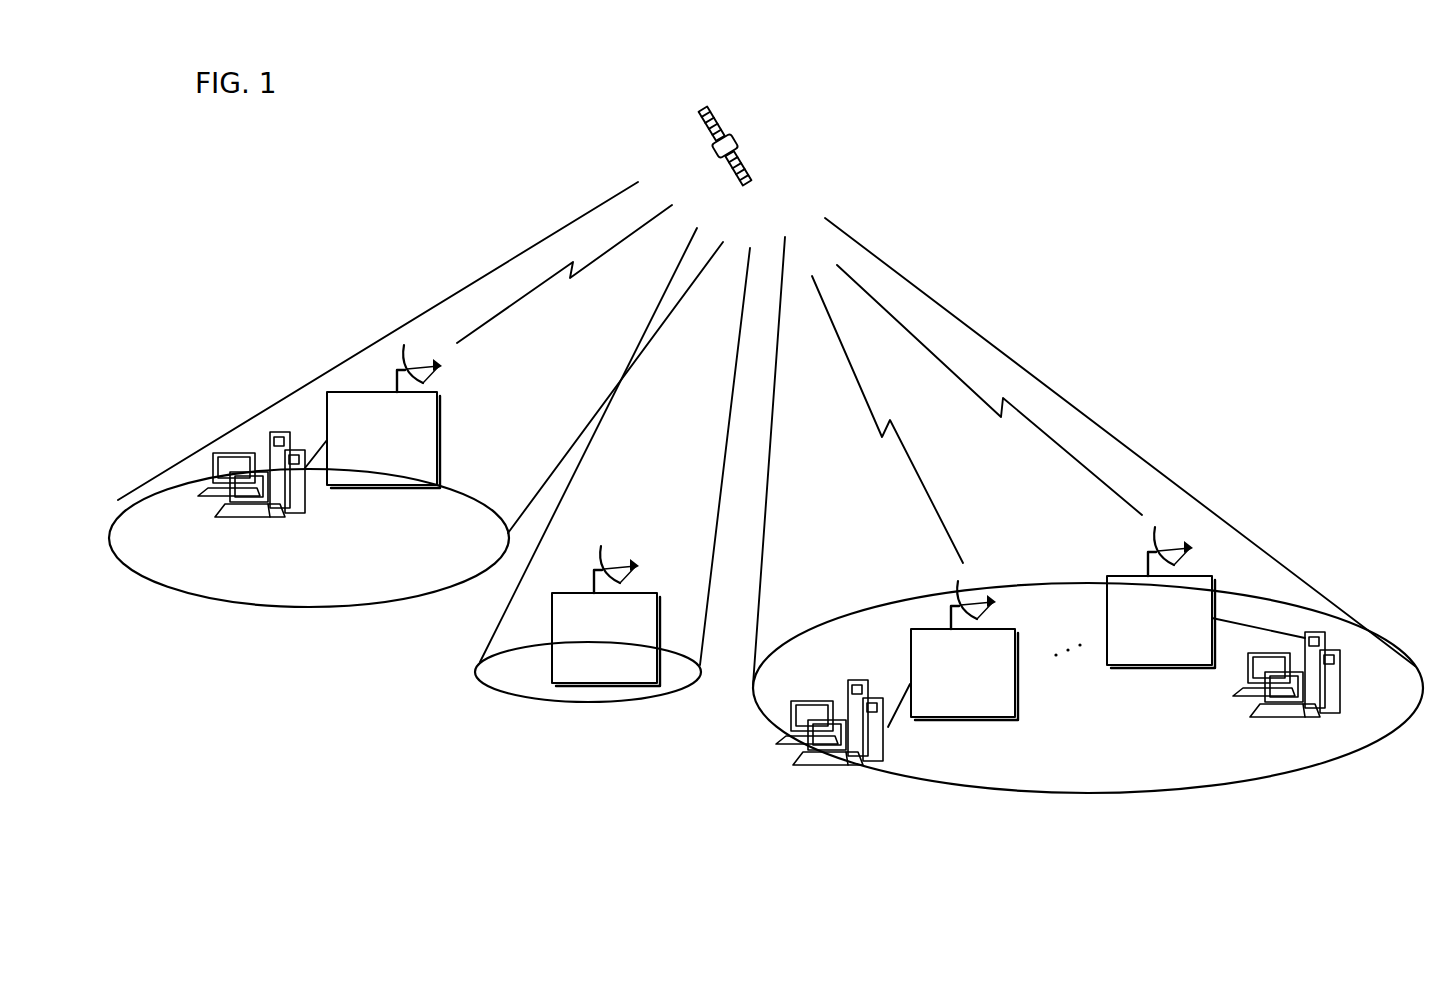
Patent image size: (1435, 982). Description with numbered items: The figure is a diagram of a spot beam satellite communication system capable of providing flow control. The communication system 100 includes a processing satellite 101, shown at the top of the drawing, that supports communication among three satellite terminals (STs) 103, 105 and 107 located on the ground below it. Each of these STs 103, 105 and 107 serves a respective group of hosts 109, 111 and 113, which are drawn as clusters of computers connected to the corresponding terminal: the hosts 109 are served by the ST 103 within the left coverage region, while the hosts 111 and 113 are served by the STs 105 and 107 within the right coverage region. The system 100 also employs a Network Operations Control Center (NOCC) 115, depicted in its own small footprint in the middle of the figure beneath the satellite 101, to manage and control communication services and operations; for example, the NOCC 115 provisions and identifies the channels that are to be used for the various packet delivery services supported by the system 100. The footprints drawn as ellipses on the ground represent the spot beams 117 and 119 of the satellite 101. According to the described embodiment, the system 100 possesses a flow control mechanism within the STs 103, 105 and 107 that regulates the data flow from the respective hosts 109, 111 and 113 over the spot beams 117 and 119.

The communication system 100 is at (594, 127).
The processing satellite 101 is at (738, 139).
The satellite terminal (ST) 103 is at (380, 486).
The satellite terminal (ST) 105 is at (962, 718).
The satellite terminal (ST) 107 is at (1157, 666).
The hosts 109 is at (255, 536).
The hosts 111 is at (825, 770).
The hosts 113 is at (1278, 723).
The Network Operations Control Center (NOCC) 115 is at (603, 684).
The spot beam 117 is at (305, 607).
The spot beam 119 is at (1091, 792).